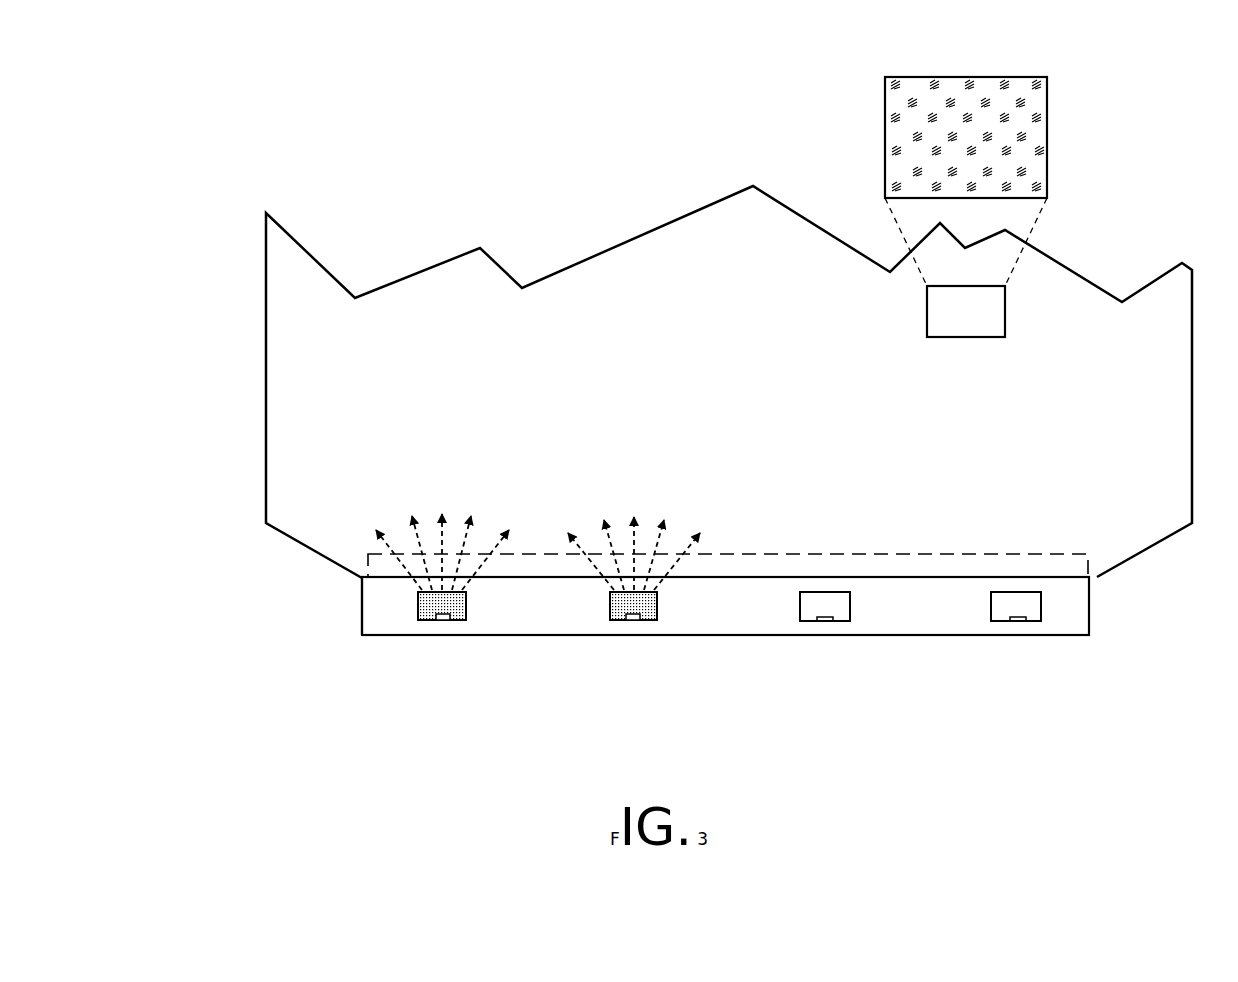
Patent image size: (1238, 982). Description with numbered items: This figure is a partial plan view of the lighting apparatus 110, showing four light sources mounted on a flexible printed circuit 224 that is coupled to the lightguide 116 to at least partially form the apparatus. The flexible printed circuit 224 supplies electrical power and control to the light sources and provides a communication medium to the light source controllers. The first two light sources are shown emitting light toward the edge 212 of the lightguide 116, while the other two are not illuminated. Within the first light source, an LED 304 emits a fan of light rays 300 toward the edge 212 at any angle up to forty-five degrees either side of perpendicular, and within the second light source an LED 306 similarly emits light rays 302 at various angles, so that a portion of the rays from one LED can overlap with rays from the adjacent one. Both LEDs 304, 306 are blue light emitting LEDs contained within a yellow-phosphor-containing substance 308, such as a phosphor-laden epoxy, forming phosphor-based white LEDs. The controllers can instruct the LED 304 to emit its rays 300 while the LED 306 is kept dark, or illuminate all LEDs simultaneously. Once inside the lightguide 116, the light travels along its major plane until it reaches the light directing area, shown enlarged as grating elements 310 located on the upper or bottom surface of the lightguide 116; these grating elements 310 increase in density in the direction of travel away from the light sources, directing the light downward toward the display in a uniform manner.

The lighting apparatus 110 is at (180, 125).
The lightguide 116 is at (266, 350).
The grating elements 310 is at (1040, 122).
The edge of the lightguide 212 is at (910, 577).
The flexible printed circuit 224 is at (362, 634).
The light rays 300 is at (450, 525).
The light rays 302 is at (578, 540).
The LED 304 is at (437, 620).
The LED 306 is at (626, 620).
The yellow-phosphor-containing substance 308 is at (416, 607).